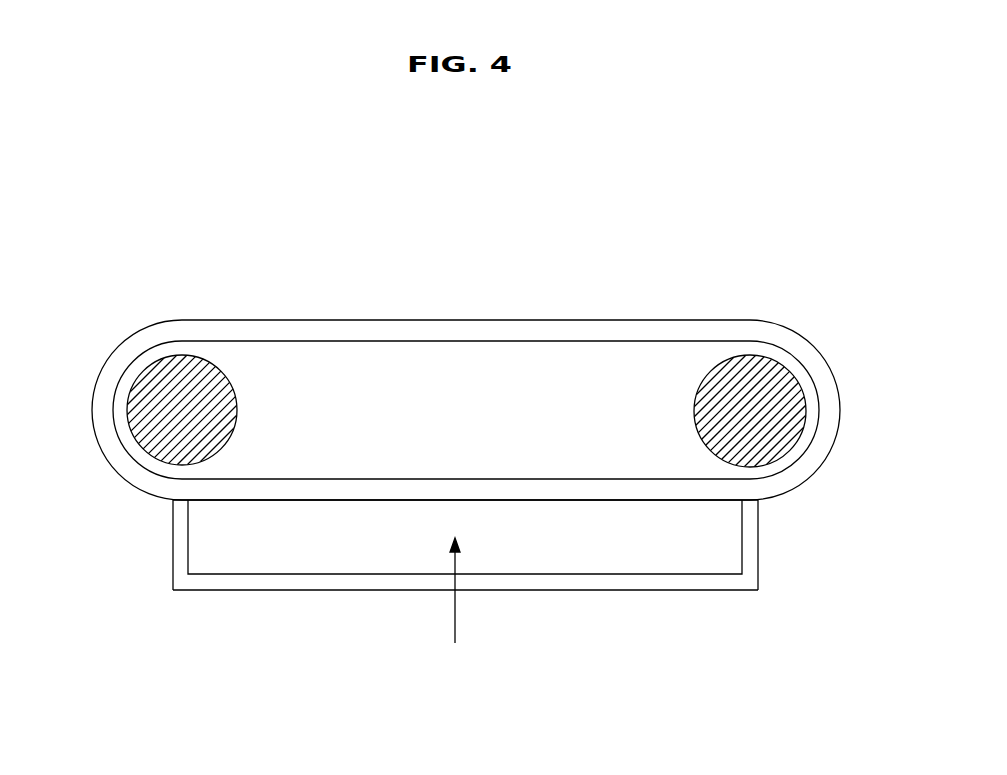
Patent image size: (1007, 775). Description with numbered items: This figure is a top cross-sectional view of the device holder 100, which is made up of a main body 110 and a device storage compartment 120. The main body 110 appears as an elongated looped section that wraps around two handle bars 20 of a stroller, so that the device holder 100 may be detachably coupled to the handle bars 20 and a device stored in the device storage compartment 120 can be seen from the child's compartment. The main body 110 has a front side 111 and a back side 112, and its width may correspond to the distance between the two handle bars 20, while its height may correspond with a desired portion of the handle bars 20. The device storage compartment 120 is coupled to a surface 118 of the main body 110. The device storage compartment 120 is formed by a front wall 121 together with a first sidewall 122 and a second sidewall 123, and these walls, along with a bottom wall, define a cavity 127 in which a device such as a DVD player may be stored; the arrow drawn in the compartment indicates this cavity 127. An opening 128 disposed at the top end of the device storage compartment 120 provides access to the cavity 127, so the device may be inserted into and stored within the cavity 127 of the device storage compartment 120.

The device holder 100 is at (90, 280).
The handle bars 20 is at (185, 357).
The main body 110 is at (838, 365).
The front side 111 is at (168, 491).
The back side 112 is at (465, 342).
The surface 118 is at (760, 502).
The device storage compartment 120 is at (768, 543).
The front wall 121 is at (276, 592).
The first sidewall 122 is at (172, 560).
The second sidewall 123 is at (760, 560).
The cavity 127 is at (459, 605).
The opening 128 is at (663, 560).